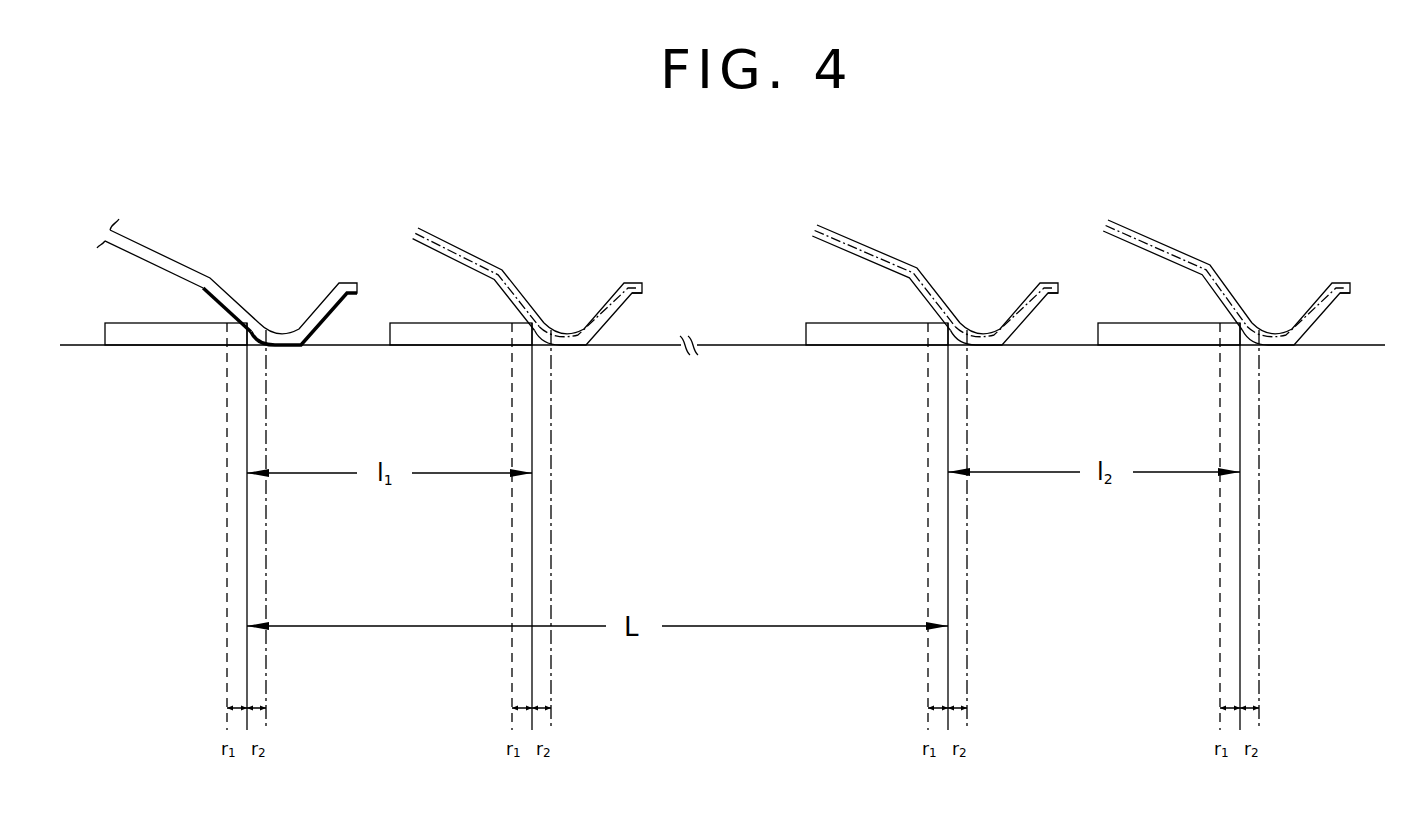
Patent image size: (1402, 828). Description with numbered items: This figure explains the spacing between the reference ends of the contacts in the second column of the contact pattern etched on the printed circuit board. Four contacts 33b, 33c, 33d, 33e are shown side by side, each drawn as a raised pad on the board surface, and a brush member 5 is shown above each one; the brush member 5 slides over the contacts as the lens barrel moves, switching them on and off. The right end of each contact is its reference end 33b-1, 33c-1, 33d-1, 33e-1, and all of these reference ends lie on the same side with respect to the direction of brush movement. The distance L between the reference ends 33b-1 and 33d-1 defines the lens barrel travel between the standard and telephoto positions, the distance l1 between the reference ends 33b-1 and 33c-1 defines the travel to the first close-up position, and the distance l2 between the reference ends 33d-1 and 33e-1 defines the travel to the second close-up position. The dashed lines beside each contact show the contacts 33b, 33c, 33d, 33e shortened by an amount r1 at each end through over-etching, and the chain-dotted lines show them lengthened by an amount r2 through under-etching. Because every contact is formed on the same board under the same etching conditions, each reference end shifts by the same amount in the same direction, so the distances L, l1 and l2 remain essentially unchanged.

The brush member 5 is at (170, 248).
The contact 33b is at (120, 323).
The contact 33c is at (423, 323).
The contact 33d is at (823, 323).
The contact 33e is at (1128, 323).
The reference end 33b-1 is at (257, 323).
The reference end 33c-1 is at (540, 327).
The reference end 33d-1 is at (957, 327).
The reference end 33e-1 is at (1252, 327).